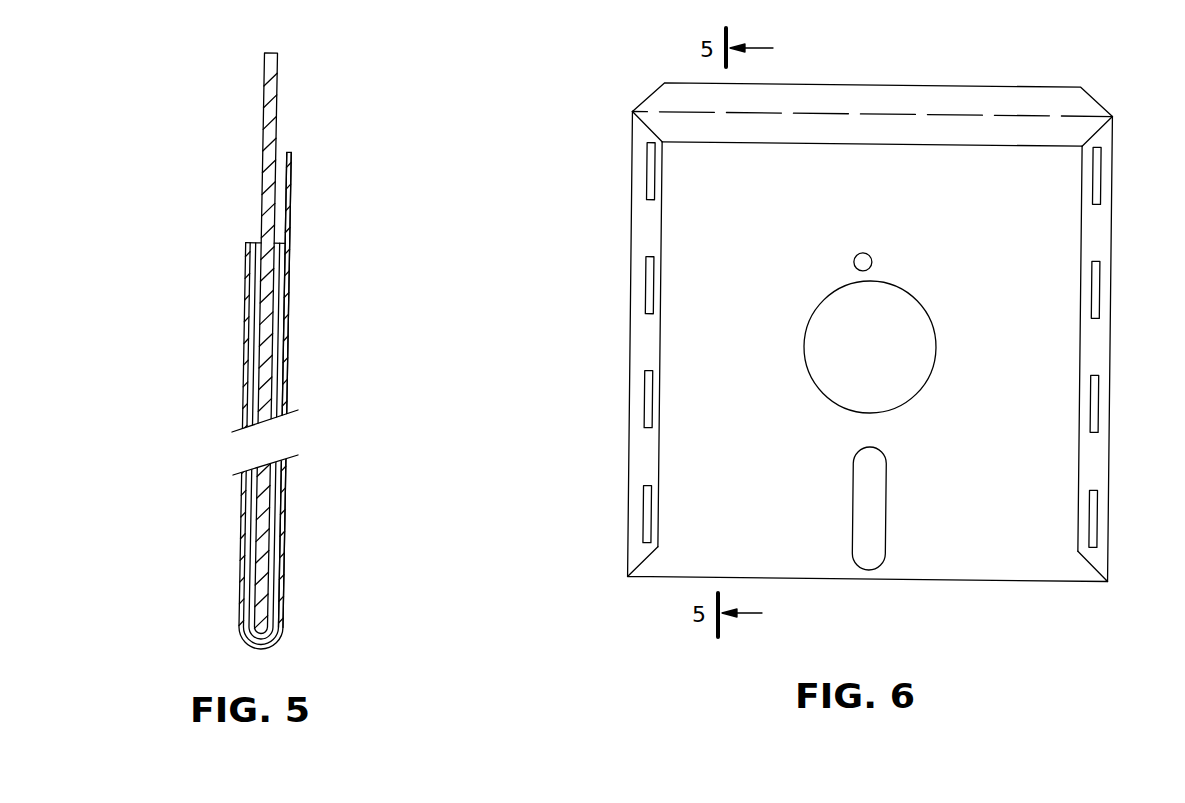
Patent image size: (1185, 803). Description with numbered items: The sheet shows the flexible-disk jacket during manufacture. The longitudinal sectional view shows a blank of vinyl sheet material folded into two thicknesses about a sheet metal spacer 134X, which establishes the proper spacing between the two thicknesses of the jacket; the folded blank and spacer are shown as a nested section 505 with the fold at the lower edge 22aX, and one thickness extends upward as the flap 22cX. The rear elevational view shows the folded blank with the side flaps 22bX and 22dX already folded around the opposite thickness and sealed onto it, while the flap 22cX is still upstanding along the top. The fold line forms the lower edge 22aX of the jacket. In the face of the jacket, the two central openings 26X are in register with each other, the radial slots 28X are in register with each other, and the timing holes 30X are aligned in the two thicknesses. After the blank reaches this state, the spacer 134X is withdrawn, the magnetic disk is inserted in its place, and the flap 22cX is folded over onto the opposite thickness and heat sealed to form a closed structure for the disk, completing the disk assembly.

In FIG. 5, the sheet metal spacer 134X is at (223, 343).
In FIG. 5, the flap 22cX is at (324, 389).
In FIG. 6, the flap 22cX is at (872, 84).
In FIG. 5, the tubular sheath 505 is at (227, 401).
In FIG. 6, the flap 22dX is at (608, 344).
In FIG. 6, the flap 22bX is at (1131, 349).
In FIG. 6, the lower edge 22aX is at (867, 596).
In FIG. 6, the central openings 26X is at (916, 301).
In FIG. 6, the timing holes 30X is at (830, 258).
In FIG. 6, the radial slots 28X is at (886, 500).